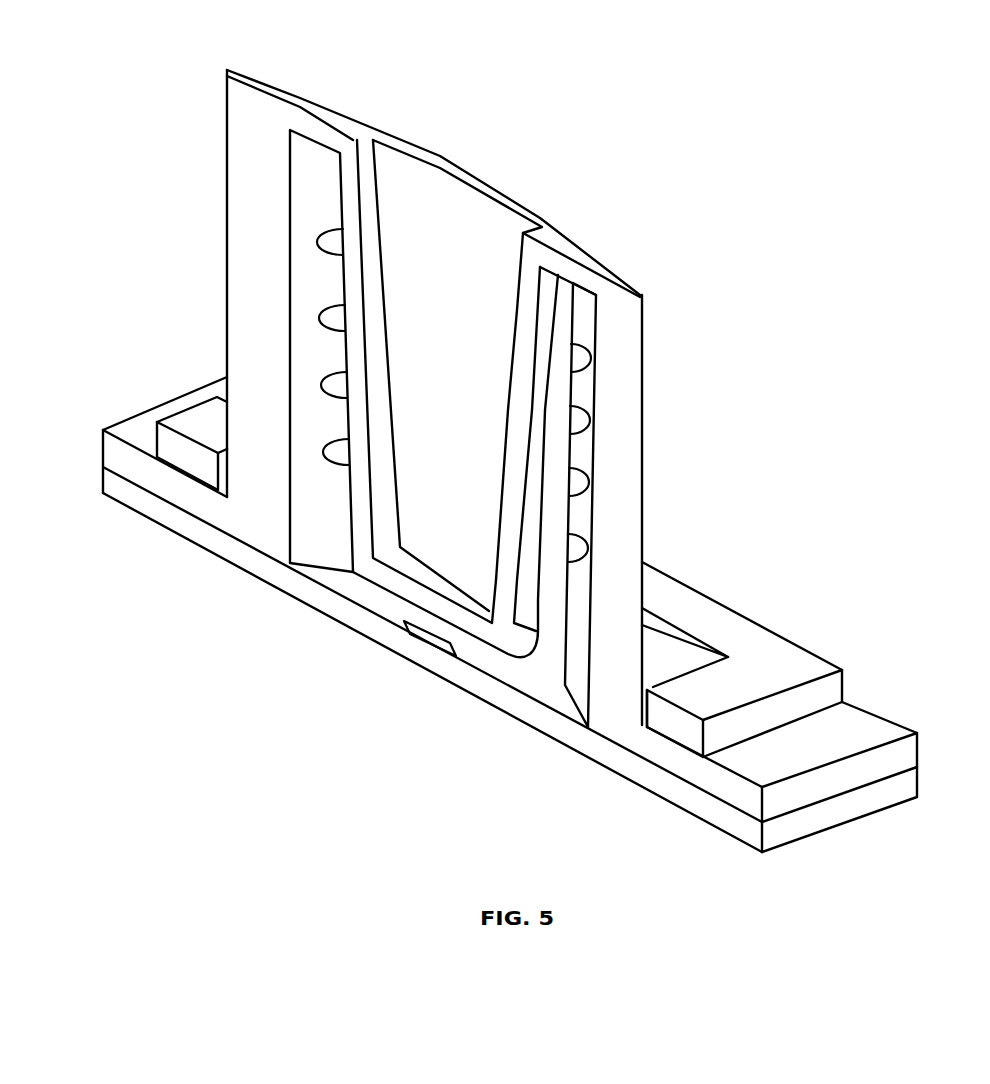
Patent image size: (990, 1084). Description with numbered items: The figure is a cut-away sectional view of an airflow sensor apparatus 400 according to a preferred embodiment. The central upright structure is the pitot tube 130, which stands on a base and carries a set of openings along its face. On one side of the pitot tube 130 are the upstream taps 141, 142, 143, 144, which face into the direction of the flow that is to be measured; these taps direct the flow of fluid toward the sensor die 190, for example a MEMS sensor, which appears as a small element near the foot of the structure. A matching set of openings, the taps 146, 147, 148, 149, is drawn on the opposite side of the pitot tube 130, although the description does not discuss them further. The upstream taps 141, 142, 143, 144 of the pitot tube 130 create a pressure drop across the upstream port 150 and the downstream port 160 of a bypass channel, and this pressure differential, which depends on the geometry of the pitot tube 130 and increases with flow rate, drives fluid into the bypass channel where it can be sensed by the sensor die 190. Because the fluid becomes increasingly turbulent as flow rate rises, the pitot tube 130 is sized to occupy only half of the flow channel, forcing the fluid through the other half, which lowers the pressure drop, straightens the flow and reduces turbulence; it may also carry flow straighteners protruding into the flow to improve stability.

The airflow sensor apparatus 400 is at (836, 150).
The pitot tube 130 is at (558, 243).
The upstream tap 141 is at (585, 540).
The upstream tap 142 is at (588, 470).
The upstream tap 143 is at (590, 407).
The upstream tap 144 is at (590, 343).
The slot 146 is at (304, 451).
The slot 147 is at (304, 385).
The slot 148 is at (304, 318).
The slot 149 is at (308, 242).
The upstream port 150 is at (536, 657).
The downstream port 160 is at (353, 576).
The sensor die 190 is at (411, 652).